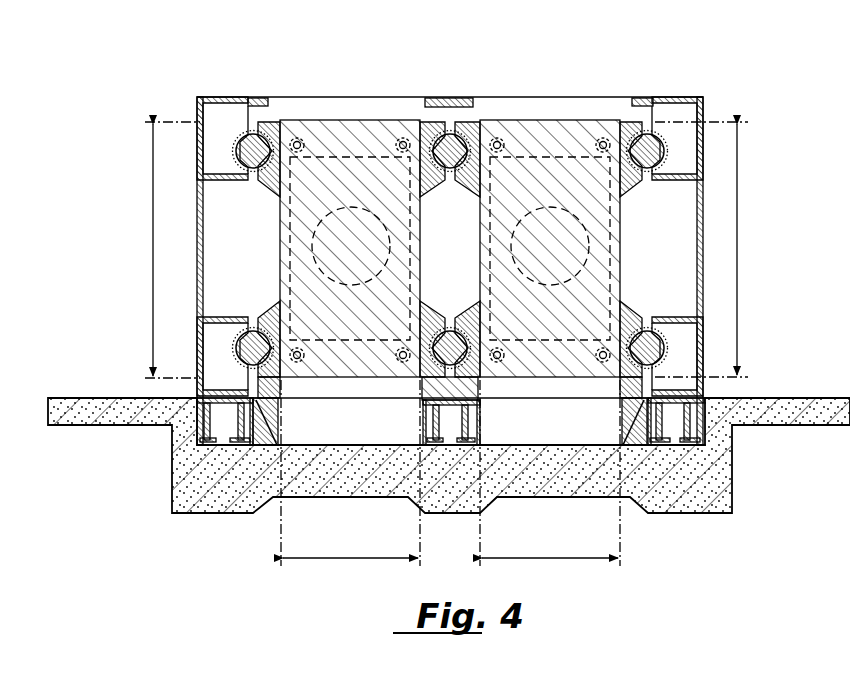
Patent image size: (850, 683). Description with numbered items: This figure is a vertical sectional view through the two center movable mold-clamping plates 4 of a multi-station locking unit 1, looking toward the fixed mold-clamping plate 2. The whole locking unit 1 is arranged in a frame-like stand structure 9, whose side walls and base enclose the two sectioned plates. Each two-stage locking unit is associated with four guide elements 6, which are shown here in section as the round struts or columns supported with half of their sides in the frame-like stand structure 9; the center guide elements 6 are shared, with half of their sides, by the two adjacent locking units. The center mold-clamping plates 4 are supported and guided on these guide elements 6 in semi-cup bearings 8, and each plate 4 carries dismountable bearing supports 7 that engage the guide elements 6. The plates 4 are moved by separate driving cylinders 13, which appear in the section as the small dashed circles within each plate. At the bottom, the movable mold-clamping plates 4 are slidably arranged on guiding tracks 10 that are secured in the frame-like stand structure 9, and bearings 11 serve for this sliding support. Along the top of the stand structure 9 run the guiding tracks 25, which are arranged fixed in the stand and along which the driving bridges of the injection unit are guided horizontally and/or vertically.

The multi-station locking unit 1 is at (100, 103).
The fixed mold-clamping plate 2 is at (580, 104).
The center movable mold-clamping plate 4 is at (362, 128).
The guide element 6 is at (253, 170).
The dismountable bearing support 7 is at (270, 300).
The semi-cup bearing 8 is at (241, 162).
The frame-like stand structure 9 is at (222, 115).
The guiding track 10 is at (283, 388).
The bearing 11 is at (485, 350).
The driving cylinder 13 is at (523, 406).
The guiding track 25 is at (258, 100).